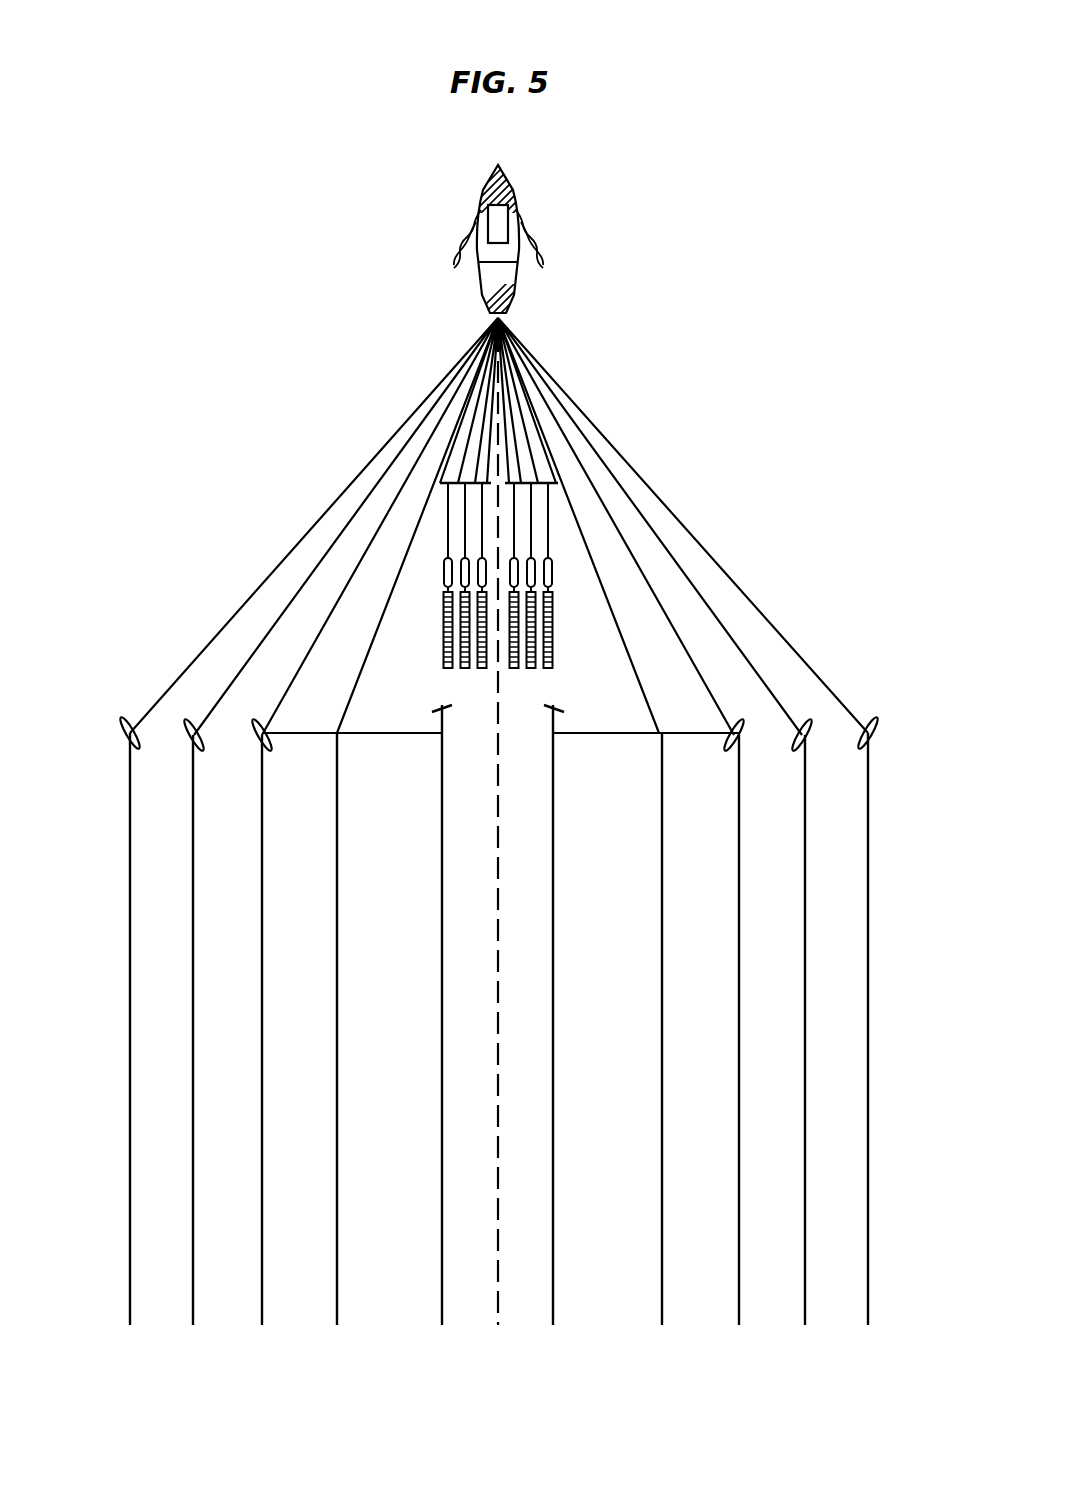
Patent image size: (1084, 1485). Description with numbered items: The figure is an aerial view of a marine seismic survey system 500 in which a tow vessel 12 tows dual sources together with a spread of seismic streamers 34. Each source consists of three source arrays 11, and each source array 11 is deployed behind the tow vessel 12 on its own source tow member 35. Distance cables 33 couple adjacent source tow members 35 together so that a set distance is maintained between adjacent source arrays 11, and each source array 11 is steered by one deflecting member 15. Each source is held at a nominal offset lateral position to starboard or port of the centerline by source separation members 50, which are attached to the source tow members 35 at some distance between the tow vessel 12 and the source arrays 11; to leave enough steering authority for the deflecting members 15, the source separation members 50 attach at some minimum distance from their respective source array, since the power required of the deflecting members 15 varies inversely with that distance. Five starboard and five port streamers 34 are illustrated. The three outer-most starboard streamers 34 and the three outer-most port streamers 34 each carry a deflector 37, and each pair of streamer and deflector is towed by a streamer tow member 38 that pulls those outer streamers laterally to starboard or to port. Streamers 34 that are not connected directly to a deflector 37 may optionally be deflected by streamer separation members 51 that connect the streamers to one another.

The marine seismic survey system 500 is at (702, 246).
The tow vessel 12 is at (483, 190).
The streamer tow member 38 is at (410, 410).
The source separation member 50 is at (440, 485).
The distance cable 33 is at (455, 480).
The source tow member 35 is at (448, 540).
The deflecting member 15 is at (448, 577).
The source array 11 is at (448, 632).
The streamer separation member 51 is at (385, 733).
The deflector 37 is at (260, 740).
The seismic streamer 34 is at (442, 947).